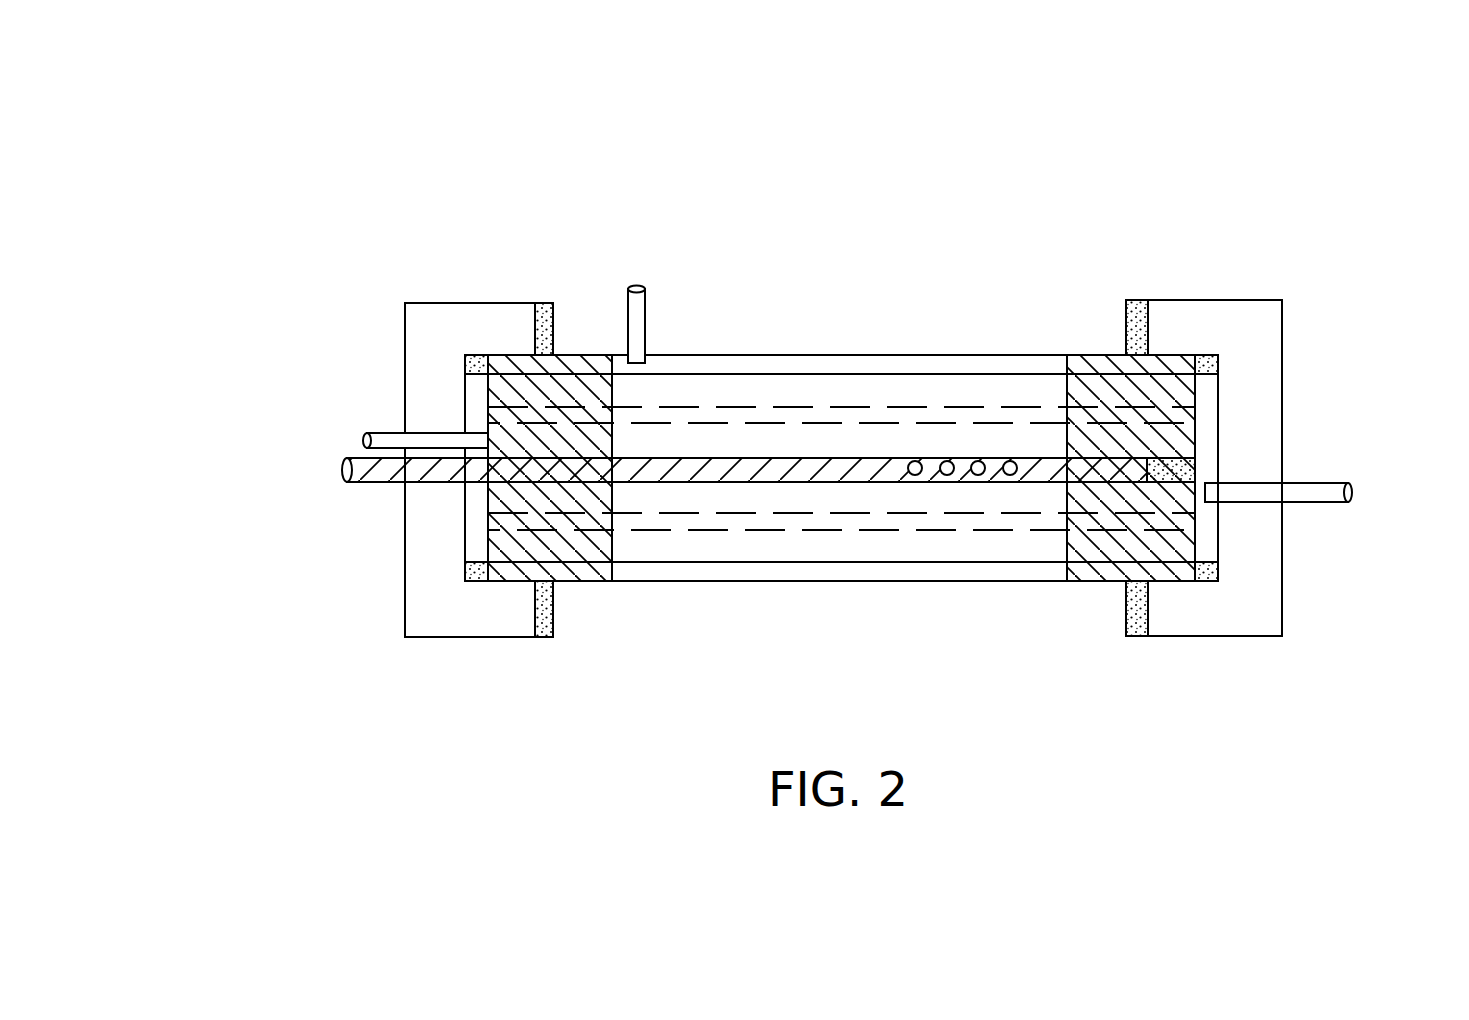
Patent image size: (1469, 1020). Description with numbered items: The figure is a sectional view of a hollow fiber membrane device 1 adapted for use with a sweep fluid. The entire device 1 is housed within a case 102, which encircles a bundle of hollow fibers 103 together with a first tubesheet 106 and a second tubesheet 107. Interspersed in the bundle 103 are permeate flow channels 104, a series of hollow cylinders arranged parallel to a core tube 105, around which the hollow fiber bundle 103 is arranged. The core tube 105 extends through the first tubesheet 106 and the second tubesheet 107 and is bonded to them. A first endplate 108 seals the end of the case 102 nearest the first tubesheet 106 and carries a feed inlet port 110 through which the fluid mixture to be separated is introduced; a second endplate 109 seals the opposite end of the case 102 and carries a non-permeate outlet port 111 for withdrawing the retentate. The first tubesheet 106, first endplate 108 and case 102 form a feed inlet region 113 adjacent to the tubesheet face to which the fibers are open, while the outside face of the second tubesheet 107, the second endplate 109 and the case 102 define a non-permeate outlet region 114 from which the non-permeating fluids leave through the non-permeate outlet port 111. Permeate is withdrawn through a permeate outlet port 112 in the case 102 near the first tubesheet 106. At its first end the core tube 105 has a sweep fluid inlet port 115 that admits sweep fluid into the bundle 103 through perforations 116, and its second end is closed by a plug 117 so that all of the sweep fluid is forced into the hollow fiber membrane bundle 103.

The hollow fiber membrane device 1 is at (337, 231).
The case 102 is at (710, 353).
The hollow fiber bundle 103 is at (819, 372).
The permeate flow channels 104 is at (660, 427).
The core tube 105 is at (866, 483).
The first tubesheet 106 is at (578, 584).
The second tubesheet 107 is at (1083, 353).
The first endplate 108 is at (404, 580).
The second endplate 109 is at (1284, 382).
The feed inlet port 110 is at (363, 441).
The non-permeate outlet port 111 is at (1325, 505).
The permeate outlet port 112 is at (635, 282).
The feed inlet region 113 is at (476, 400).
The non-permeate outlet region 114 is at (1205, 405).
The sweep fluid inlet port 115 is at (340, 473).
The perforations 116 is at (1009, 486).
The plug 117 is at (1197, 466).